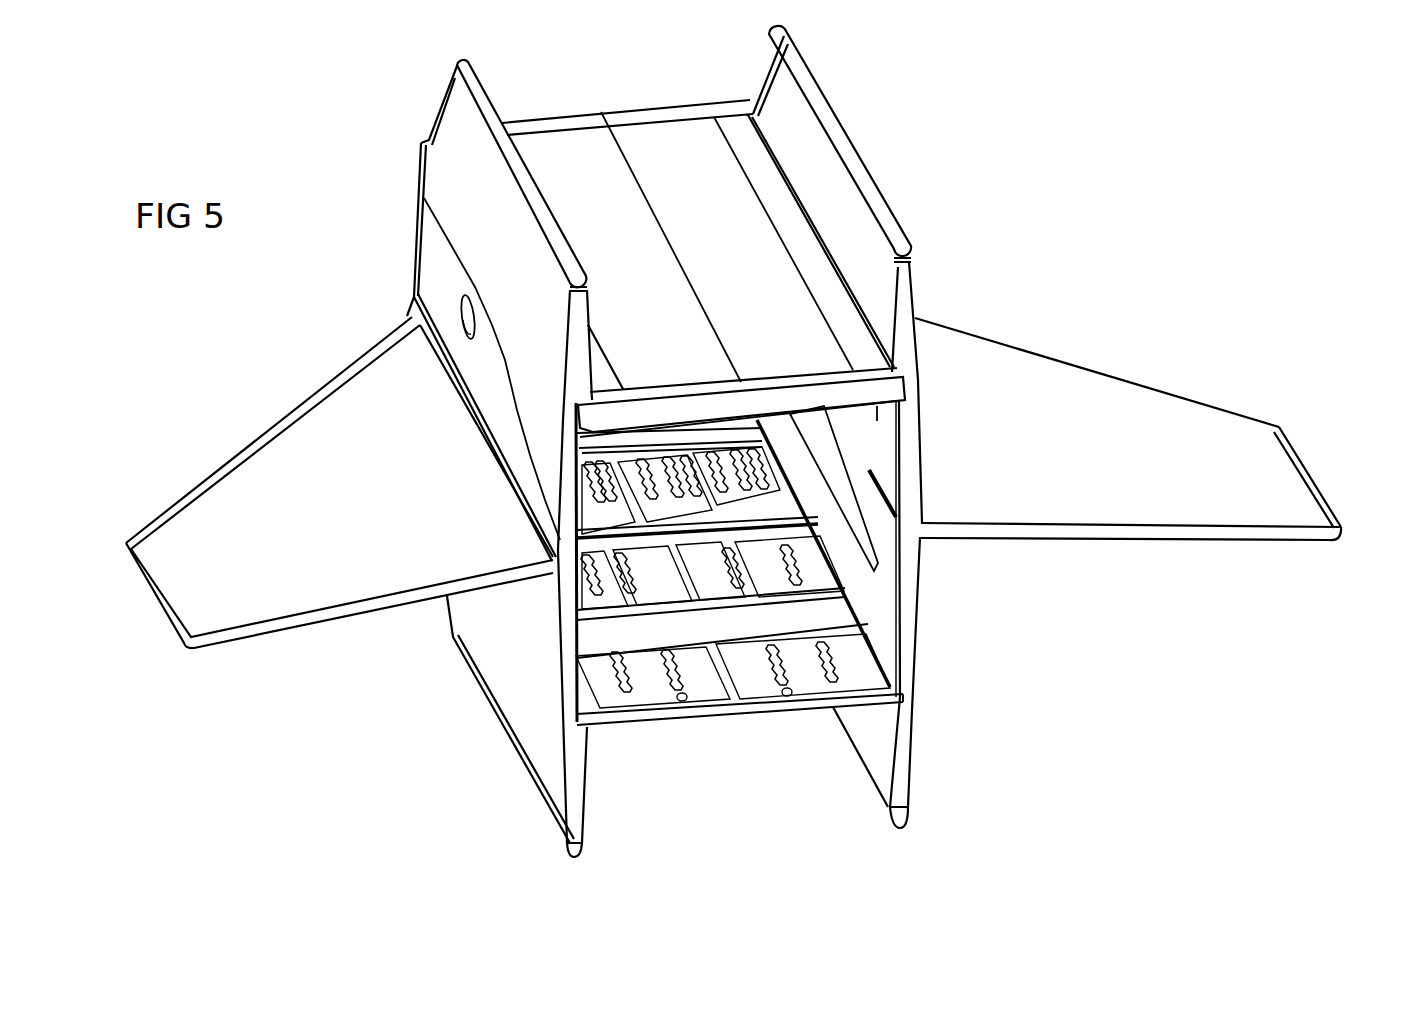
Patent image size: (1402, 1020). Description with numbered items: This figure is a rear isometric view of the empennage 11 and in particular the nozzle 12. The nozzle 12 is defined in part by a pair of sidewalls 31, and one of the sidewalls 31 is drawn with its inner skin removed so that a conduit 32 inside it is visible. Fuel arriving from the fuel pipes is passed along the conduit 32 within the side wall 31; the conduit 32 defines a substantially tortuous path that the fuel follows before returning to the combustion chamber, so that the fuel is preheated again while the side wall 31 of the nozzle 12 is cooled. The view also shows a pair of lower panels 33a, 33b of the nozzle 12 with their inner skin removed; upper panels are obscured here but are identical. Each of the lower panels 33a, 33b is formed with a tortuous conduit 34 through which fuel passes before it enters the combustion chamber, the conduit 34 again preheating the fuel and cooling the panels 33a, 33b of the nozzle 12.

The empennage 11 is at (1027, 213).
The nozzle 12 is at (886, 590).
The sidewall 31 is at (568, 687).
The conduit 32 is at (878, 440).
The lower panel 33a is at (610, 637).
The lower panel 33b is at (627, 522).
The conduit 34 is at (598, 485).